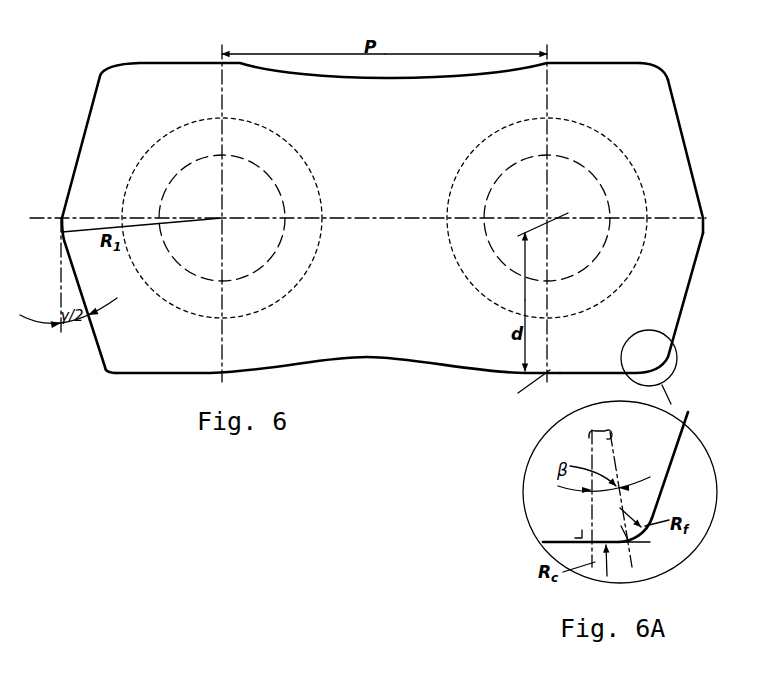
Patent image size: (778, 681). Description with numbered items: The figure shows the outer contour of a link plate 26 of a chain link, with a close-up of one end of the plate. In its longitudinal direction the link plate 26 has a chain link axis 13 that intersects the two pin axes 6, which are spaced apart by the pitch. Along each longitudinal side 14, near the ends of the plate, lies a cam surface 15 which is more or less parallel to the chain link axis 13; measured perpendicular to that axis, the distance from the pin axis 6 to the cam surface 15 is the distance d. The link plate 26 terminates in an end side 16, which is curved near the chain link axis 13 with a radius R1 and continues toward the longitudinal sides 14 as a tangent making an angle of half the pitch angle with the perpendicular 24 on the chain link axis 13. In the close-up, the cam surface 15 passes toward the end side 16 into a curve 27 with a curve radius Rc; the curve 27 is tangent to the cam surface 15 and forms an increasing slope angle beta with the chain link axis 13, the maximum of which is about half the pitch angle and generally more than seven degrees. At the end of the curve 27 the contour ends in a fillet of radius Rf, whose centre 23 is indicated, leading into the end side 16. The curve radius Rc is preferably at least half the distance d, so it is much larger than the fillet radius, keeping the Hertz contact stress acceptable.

In FIG. 6, the pin axis 6 is at (222, 218).
In FIG. 6, the chain link axis 13 is at (353, 220).
In FIG. 6, the longitudinal side 14 is at (365, 364).
In FIG. 6, the cam surface 15 is at (580, 375).
In FIG. 6A, the cam surface 15 is at (558, 545).
In FIG. 6, the end side 16 is at (680, 318).
In FIG. 6A, the end side 16 is at (668, 470).
In FIG. 6A, the centre of the fillet radius 23 is at (621, 507).
In FIG. 6A, the perpendicular on the chain link axis 24 is at (590, 514).
In FIG. 6, the link plate 26 is at (657, 79).
In FIG. 6A, the curve 27 is at (632, 541).